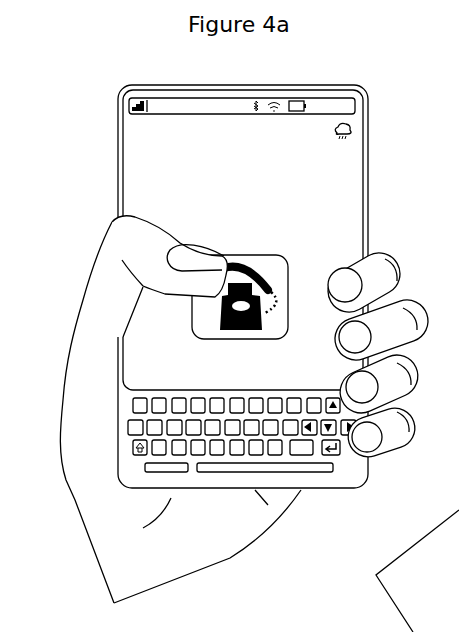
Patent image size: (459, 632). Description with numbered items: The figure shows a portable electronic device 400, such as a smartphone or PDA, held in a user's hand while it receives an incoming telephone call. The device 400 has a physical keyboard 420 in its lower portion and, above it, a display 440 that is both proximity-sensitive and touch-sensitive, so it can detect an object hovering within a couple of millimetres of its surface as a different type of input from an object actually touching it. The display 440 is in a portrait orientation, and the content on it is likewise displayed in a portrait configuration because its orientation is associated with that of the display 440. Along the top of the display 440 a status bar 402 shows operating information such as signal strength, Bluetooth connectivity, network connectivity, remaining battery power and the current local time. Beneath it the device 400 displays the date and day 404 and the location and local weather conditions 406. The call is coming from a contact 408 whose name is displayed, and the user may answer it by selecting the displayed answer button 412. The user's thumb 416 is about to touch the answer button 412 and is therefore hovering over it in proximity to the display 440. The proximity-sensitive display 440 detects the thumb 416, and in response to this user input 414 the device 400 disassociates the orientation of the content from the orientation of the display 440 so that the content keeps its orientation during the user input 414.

The portable electronic device 400 is at (146, 71).
The status bar 402 is at (128, 103).
The date and day 404 is at (138, 137).
The location and local weather conditions 406 is at (355, 132).
The contact 408 is at (345, 188).
The answer button 412 is at (280, 257).
The user input 414 is at (122, 290).
The thumb 416 is at (205, 295).
The physical keyboard 420 is at (301, 473).
The display 440 is at (120, 189).